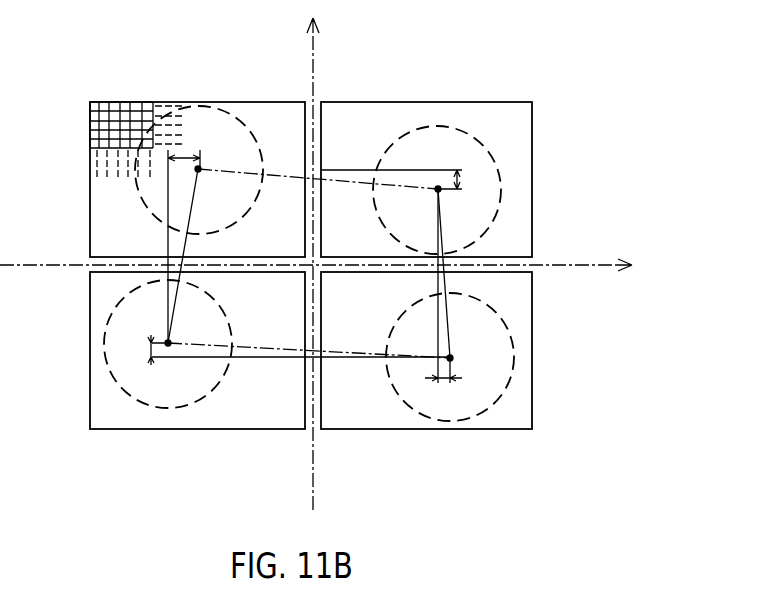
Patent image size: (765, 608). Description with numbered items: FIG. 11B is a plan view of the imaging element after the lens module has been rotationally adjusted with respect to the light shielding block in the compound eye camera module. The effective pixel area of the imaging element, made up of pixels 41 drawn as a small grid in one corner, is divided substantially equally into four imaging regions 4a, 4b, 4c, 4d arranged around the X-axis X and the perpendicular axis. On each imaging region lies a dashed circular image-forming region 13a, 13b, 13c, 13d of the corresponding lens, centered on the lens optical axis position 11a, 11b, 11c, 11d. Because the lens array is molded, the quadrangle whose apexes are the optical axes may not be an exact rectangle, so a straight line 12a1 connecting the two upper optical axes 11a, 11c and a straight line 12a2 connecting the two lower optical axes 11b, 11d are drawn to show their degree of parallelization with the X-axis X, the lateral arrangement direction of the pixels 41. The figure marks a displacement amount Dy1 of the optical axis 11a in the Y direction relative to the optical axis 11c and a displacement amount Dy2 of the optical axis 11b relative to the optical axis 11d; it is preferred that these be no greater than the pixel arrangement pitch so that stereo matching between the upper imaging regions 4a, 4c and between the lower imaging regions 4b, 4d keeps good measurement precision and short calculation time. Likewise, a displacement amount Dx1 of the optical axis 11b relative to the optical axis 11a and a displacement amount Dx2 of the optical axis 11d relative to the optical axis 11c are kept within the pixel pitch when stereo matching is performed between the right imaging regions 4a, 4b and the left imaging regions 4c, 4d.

The pixels 41 is at (108, 103).
The imaging region 4a is at (513, 135).
The imaging region 4b is at (517, 405).
The imaging region 4c is at (278, 114).
The imaging region 4d is at (108, 410).
The optical axis position 11a is at (438, 189).
The optical axis position 11b is at (450, 358).
The optical axis position 11c is at (199, 169).
The optical axis position 11d is at (168, 343).
The straight line 12a1 is at (353, 178).
The straight line 12a2 is at (273, 348).
The image-forming region 13a is at (462, 128).
The image-forming region 13b is at (513, 337).
The image-forming region 13c is at (133, 222).
The image-forming region 13d is at (180, 408).
The displacement amount Dx1 is at (450, 372).
The displacement amount Dx2 is at (190, 157).
The displacement amount Dy1 is at (460, 180).
The displacement amount Dy2 is at (150, 349).
The X-axis X is at (645, 267).